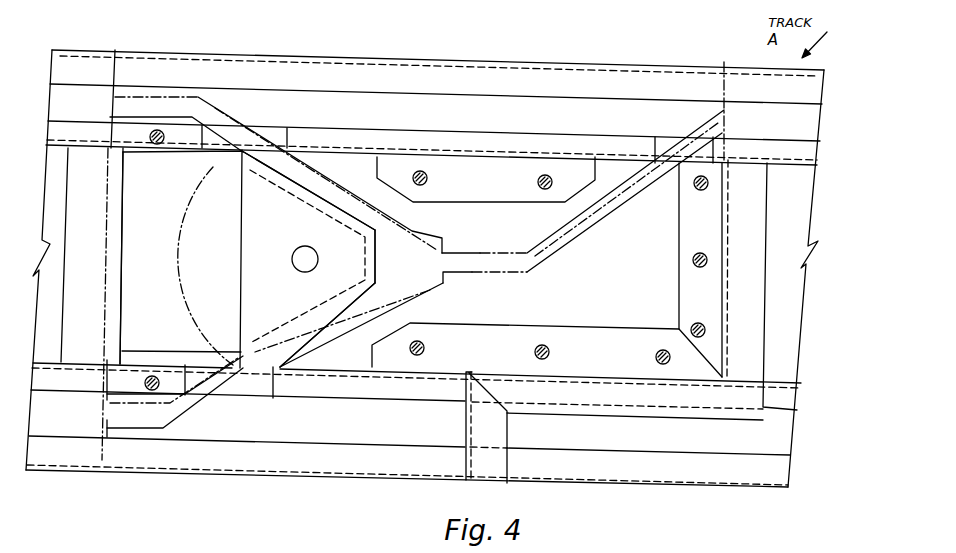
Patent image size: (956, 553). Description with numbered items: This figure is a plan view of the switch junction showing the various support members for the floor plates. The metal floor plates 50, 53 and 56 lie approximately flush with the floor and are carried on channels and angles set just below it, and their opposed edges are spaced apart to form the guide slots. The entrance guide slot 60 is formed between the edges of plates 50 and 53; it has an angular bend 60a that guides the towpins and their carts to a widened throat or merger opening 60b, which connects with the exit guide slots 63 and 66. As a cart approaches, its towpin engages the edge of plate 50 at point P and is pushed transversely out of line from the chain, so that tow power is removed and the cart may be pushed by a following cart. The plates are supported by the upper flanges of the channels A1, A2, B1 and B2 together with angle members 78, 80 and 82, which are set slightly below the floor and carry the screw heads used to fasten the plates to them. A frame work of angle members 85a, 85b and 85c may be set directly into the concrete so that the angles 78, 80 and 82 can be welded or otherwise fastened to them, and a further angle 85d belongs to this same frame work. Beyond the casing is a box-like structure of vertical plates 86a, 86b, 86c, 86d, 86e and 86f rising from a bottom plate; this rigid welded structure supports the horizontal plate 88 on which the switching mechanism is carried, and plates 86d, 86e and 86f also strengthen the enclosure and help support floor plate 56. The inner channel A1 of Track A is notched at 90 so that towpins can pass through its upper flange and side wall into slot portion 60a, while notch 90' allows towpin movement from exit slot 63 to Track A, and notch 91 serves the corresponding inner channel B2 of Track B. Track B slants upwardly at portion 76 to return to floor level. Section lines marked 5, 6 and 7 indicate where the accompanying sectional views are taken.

The floor plate 50 is at (452, 82).
The floor plate 53 is at (367, 461).
The floor plate 56 is at (150, 217).
The entrance guide slot 60 is at (478, 264).
The angular bend 60a is at (582, 238).
The widened throat or merger opening 60b is at (403, 292).
The exit guide slot 63 is at (354, 197).
The exit guide slot 66 is at (345, 324).
The slanting portion of Track B 76 is at (275, 485).
The angle member 78 is at (518, 195).
The angle member 80 is at (598, 335).
The angle member 82 is at (682, 221).
The frame work angle member 85a is at (502, 430).
The frame work angle member 85b is at (697, 399).
The frame work angle member 85c is at (756, 310).
The side bracket 85d is at (167, 283).
The vertical plate 86a is at (373, 263).
The vertical plate 86b is at (326, 212).
The vertical plate 86c is at (320, 310).
The vertical plate 86d is at (122, 254).
The vertical plate 86e is at (195, 157).
The vertical plate 86f is at (170, 357).
The horizontal plate 88 is at (289, 255).
The notch 90 is at (625, 181).
The notch 90' is at (248, 122).
The notch 91 is at (257, 385).
The section line 5- 5 is at (724, 62).
The section line 6- 6 is at (218, 43).
The section line 7- 7 is at (107, 415).
The inner channel A1 is at (765, 150).
The channel A2 is at (795, 95).
The point P is at (695, 116).
The channel B1 is at (427, 457).
The inner channel B2 is at (397, 393).